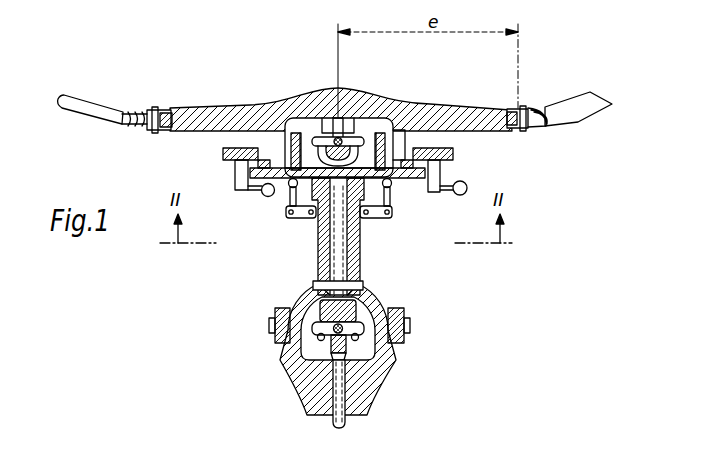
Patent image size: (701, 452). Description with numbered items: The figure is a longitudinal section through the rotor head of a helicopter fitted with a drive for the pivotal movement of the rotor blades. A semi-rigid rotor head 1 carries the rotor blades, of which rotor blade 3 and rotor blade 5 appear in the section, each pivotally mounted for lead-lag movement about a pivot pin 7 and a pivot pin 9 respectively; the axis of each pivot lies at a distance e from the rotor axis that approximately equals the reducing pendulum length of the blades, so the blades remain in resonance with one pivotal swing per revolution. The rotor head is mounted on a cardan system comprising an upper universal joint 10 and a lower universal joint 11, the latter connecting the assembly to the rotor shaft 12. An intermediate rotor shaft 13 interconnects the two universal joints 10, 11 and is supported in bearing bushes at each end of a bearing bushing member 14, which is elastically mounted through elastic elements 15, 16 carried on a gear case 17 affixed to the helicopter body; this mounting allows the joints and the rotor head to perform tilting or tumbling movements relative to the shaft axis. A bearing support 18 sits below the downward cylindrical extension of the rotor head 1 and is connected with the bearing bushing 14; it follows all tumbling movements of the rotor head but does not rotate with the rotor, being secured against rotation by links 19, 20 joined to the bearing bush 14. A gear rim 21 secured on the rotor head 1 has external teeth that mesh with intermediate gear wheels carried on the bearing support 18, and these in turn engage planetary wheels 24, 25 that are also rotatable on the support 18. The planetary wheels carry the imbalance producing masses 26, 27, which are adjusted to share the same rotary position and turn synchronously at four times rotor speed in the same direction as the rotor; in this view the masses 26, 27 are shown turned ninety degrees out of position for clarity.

The semi-rigid rotor head 1 is at (492, 124).
The rotor blade 3 is at (614, 105).
The rotor blade 5 is at (76, 104).
The pivot pin 7 is at (527, 128).
The pivot pin 9 is at (157, 108).
The upper universal joint 10 is at (335, 137).
The lower universal joint 11 is at (352, 340).
The rotor shaft 12 is at (340, 398).
The intermediate rotor shaft 13 is at (337, 250).
The bearing bushing member 14 is at (356, 238).
The elastic element 15 is at (278, 338).
The elastic element 16 is at (402, 321).
The gear case 17 is at (310, 396).
The bearing support 18 is at (288, 134).
The link 19 is at (300, 222).
The link 20 is at (376, 219).
The gear rim 21 is at (408, 142).
The planetary wheel 24 is at (221, 155).
The planetary wheel 25 is at (453, 156).
The imbalance producing mass 26 is at (262, 196).
The imbalance producing mass 27 is at (462, 196).